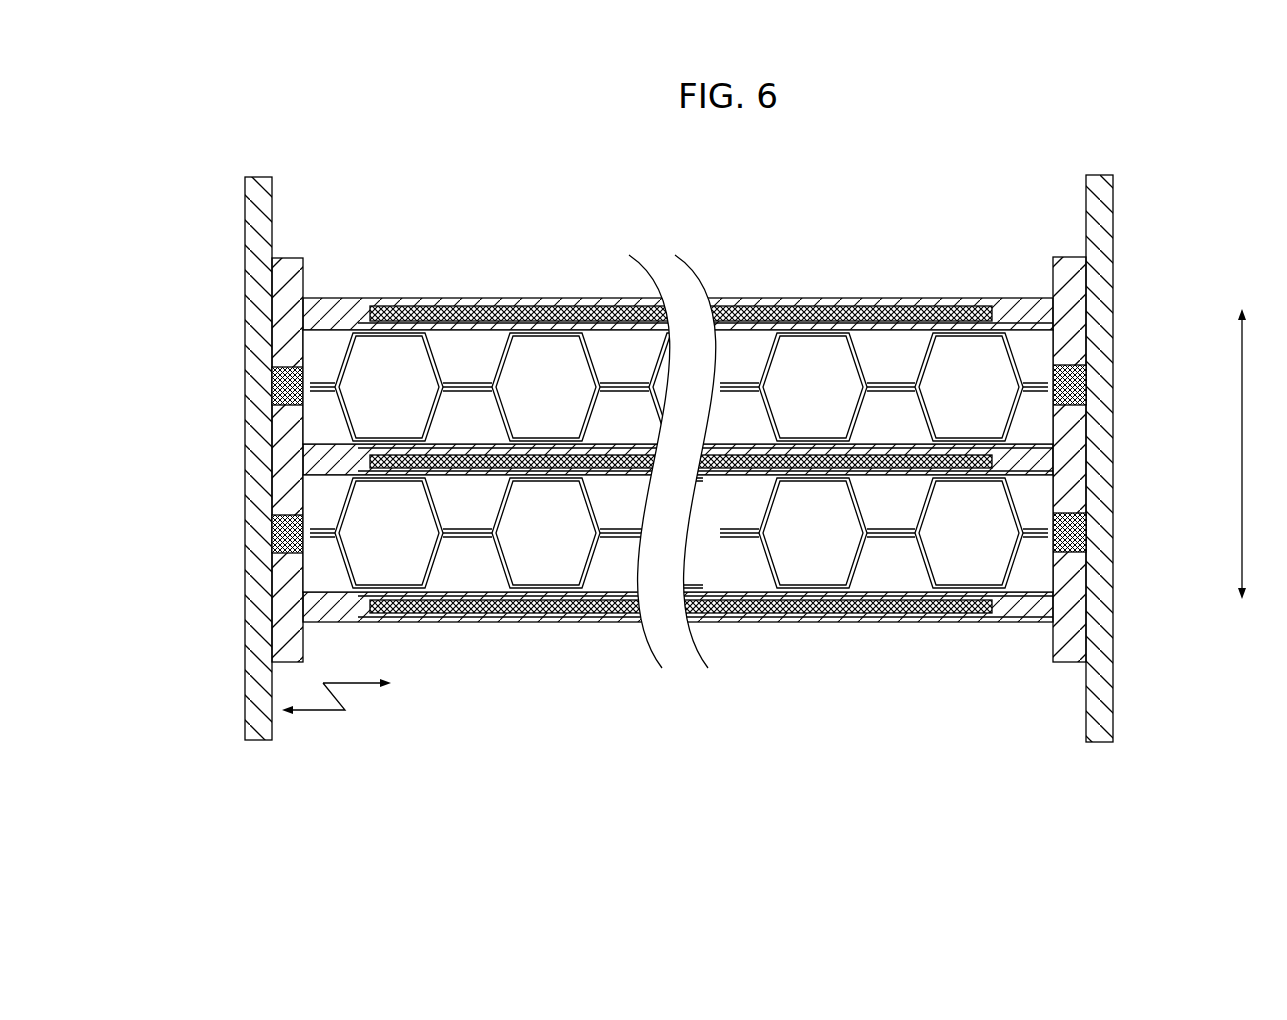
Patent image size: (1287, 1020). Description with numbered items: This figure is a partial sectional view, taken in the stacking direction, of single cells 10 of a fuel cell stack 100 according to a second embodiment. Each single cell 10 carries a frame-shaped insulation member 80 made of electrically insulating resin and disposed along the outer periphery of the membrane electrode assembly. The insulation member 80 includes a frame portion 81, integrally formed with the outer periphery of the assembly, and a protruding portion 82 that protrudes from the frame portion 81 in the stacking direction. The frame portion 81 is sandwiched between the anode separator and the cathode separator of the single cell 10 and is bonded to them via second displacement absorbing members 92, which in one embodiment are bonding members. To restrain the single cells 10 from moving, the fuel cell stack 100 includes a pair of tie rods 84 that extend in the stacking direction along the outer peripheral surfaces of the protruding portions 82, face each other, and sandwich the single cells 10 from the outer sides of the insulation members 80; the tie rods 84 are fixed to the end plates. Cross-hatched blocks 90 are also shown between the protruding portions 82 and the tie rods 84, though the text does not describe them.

The fuel cell stack 100 is at (1072, 163).
The single cell 10 is at (678, 401).
The second displacement absorbing member 92 is at (373, 441).
The spacer 90 is at (272, 388).
The tie rod 84 is at (258, 226).
The insulation member 80 is at (676, 459).
The protruding portion 82 is at (295, 421).
The frame portion 81 is at (323, 461).